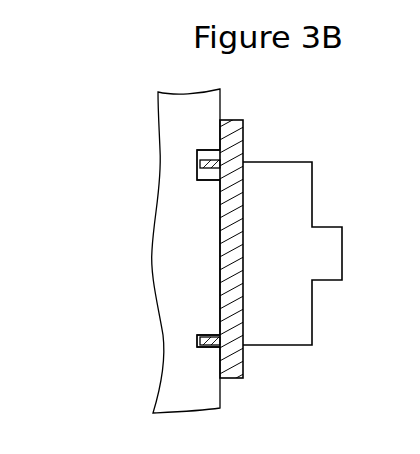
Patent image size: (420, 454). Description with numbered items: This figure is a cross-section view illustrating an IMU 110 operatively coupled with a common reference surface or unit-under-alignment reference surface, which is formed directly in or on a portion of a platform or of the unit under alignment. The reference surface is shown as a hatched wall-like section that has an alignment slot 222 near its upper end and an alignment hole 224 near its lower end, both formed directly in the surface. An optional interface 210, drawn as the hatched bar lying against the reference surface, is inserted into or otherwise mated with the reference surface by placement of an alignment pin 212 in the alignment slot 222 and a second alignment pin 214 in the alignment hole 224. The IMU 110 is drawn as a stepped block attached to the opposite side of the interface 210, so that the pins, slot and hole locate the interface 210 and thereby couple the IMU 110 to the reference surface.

The interface 210 is at (230, 360).
The alignment slot 222 is at (197, 153).
The alignment pin 212 is at (203, 175).
The alignment pin 214 is at (197, 337).
The alignment hole 224 is at (197, 347).
The IMU 110 is at (292, 253).